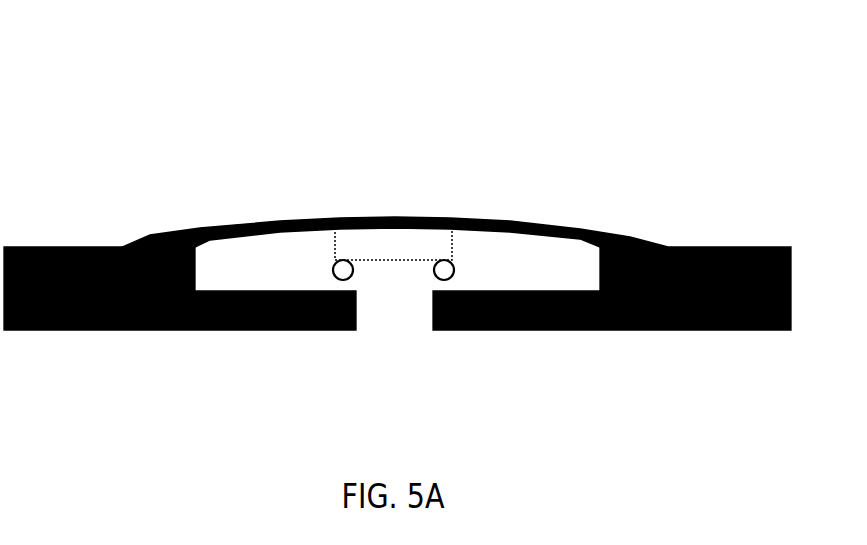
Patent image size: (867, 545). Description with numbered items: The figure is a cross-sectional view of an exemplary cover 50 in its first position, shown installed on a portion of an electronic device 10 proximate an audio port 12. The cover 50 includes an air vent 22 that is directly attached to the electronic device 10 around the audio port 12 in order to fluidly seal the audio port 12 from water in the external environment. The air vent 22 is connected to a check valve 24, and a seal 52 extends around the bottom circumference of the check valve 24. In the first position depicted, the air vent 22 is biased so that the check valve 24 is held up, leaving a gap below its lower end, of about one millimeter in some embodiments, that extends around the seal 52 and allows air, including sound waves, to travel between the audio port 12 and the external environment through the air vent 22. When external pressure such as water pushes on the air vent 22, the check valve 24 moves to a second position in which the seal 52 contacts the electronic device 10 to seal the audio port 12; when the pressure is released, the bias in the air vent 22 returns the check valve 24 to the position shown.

The electronic device 10 is at (73, 247).
The audio port 12 is at (378, 327).
The air vent 22 is at (273, 224).
The check valve 24 is at (383, 253).
The cover 50 is at (192, 102).
The seal 52 is at (333, 272).